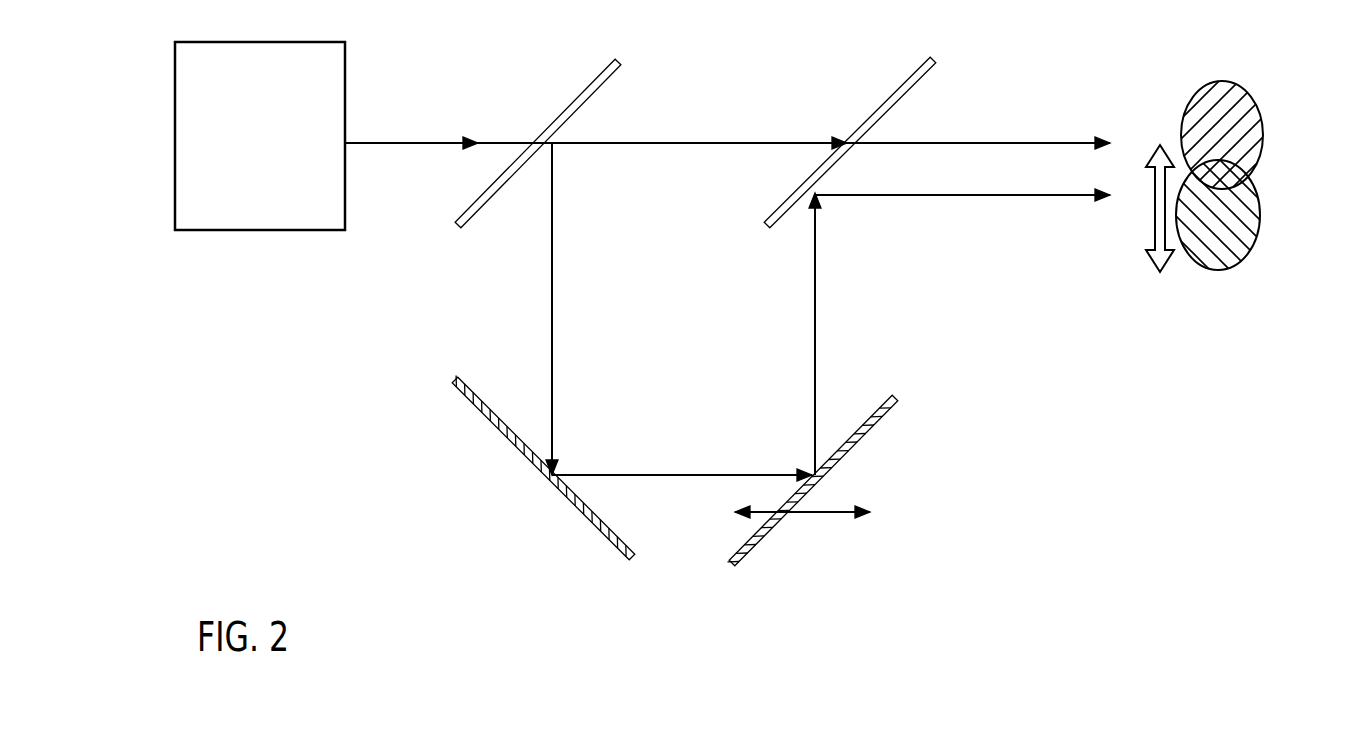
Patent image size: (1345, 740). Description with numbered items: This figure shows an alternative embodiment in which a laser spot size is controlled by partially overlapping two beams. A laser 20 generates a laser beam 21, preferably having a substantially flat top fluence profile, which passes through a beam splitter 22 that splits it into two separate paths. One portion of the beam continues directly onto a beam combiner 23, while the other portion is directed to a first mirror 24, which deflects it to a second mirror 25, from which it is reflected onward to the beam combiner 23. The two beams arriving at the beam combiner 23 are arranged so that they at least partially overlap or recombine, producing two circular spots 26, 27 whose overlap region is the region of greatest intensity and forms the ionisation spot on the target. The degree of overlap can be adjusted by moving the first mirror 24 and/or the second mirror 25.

The laser 20 is at (275, 163).
The laser beam 21 is at (407, 141).
The beam splitter 22 is at (604, 96).
The beam combiner 23 is at (898, 80).
The first mirror 24 is at (633, 568).
The second mirror 25 is at (731, 567).
The circular spot 26 is at (1262, 150).
The circular spot 27 is at (1262, 222).